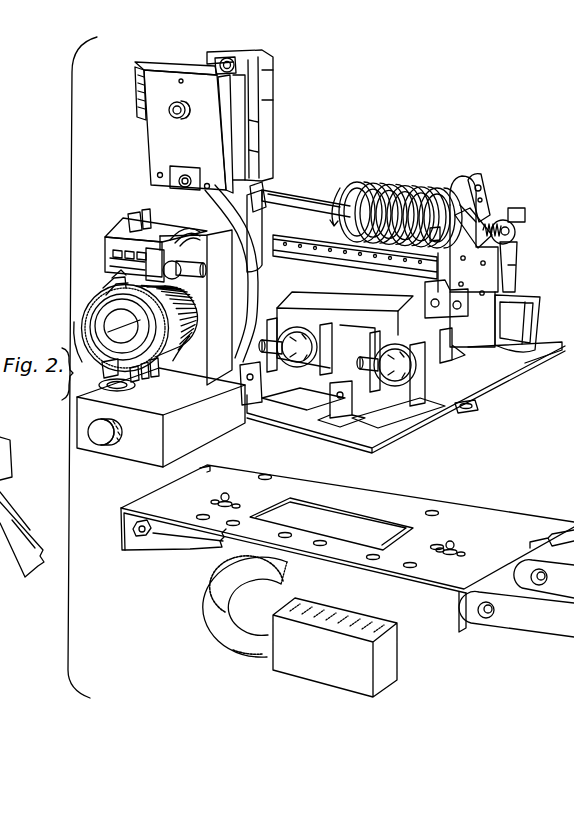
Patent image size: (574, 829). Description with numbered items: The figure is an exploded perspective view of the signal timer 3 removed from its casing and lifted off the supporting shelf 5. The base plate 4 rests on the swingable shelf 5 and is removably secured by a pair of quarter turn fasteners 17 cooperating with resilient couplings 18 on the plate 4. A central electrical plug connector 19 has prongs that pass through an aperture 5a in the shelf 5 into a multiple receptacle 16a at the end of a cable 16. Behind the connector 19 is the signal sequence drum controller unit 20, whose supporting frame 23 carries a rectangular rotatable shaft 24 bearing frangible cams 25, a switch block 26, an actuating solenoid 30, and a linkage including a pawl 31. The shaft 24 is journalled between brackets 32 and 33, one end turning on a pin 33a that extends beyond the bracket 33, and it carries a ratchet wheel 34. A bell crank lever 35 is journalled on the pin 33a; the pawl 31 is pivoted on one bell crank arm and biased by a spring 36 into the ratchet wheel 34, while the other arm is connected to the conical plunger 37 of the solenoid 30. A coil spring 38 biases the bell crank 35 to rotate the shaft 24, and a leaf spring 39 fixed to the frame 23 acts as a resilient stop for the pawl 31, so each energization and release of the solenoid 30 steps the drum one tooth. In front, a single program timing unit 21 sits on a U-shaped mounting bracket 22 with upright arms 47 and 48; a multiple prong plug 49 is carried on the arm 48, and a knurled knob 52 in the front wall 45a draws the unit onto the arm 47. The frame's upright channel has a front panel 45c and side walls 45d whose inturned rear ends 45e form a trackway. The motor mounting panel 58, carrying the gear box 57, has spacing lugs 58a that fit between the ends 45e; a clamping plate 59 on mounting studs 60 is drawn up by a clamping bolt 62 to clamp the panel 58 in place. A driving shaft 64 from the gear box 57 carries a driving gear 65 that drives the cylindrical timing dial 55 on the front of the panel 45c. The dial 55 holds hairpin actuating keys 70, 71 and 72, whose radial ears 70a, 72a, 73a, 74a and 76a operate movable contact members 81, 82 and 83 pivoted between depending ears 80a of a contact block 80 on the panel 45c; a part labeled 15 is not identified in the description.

The signal timer 3 is at (350, 152).
The base plate 4 is at (418, 419).
The supporting shelf 5 is at (493, 508).
The aperture 5a is at (352, 514).
The terminal 15 is at (105, 368).
The cable 16 is at (226, 648).
The multiple receptacle 16a is at (320, 679).
The quarter turn fasteners 17 is at (234, 484).
The resilient couplings 18 is at (465, 404).
The electrical plug connector 19 is at (368, 330).
The signal sequence drum controller unit 20 is at (350, 285).
The program timing unit 21 is at (212, 417).
The mounting bracket 22 is at (306, 393).
The supporting frame 23 is at (483, 323).
The rotatable shaft 24 is at (293, 195).
The cams 25 is at (398, 184).
The switch block 26 is at (291, 240).
The actuating solenoid 30 is at (517, 312).
The pawl 31 is at (460, 186).
The bracket 32 is at (259, 185).
The shaft journal bracket 33 is at (478, 250).
The pin 33a is at (510, 235).
The ratchet wheel 34 is at (463, 211).
The bell crank lever 35 is at (484, 178).
The spring 36 is at (478, 184).
The plunger 37 is at (516, 275).
The coil spring 38 is at (495, 220).
The leaf spring 39 is at (440, 283).
The front wall 45a is at (137, 455).
The front panel 45c is at (120, 234).
The side walls 45d is at (132, 215).
The inturned rear end portions 45e is at (152, 213).
The upright arm 47 is at (251, 399).
The upright arm 48 is at (232, 315).
The multiple prong electric plug 49 is at (300, 328).
The knurled knob 52 is at (118, 438).
The timing dial 55 is at (204, 304).
The gear box 57 is at (242, 139).
The motor mounting panel 58 is at (188, 70).
The spacing lugs 58a is at (148, 66).
The clamping plate 59 is at (148, 152).
The mounting studs 60 is at (157, 175).
The clamping bolt 62 is at (228, 57).
The driving shaft 64 is at (186, 107).
The driving gear 65 is at (178, 119).
The actuating key 70 is at (112, 283).
The contact actuating ear 70a is at (114, 280).
The actuating key 71 is at (100, 297).
The actuating key 72 is at (170, 352).
The contact actuating ear 72a is at (170, 326).
The contact actuating ear 73a is at (159, 375).
The contact actuating ear 74a is at (149, 378).
The contact actuating ear 76a is at (140, 382).
The contact block 80 is at (108, 247).
The depending ears 80a is at (165, 256).
The movable contact member 81 is at (204, 272).
The movable contact member 82 is at (178, 277).
The movable contact member 83 is at (134, 271).